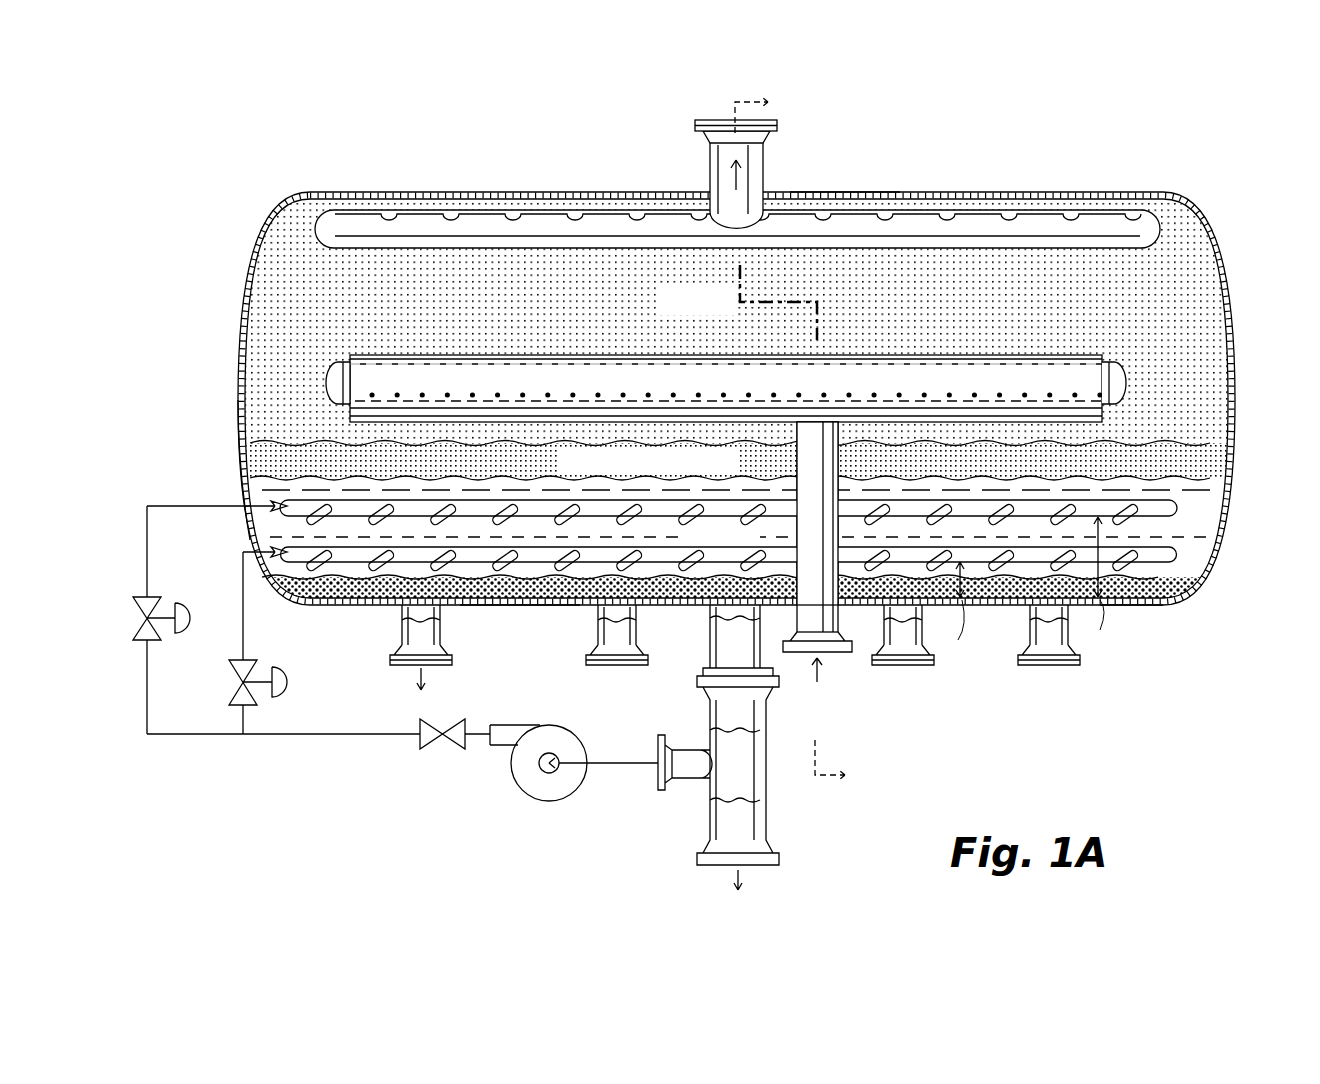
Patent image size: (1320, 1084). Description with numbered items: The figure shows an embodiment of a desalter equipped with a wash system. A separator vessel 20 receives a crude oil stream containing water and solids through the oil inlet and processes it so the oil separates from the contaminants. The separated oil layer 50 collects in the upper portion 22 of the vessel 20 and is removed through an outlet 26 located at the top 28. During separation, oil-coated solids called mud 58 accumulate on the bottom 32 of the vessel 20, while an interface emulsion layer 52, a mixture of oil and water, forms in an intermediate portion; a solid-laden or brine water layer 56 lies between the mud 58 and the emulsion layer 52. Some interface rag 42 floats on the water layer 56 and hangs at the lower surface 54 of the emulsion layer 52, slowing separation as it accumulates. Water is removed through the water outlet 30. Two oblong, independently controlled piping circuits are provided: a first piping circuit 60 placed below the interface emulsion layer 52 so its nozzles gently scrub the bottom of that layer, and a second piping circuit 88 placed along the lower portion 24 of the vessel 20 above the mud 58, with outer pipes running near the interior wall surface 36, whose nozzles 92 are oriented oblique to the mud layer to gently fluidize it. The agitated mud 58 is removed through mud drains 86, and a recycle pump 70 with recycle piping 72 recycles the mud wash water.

The separator vessel 20 is at (420, 183).
The upper portion 22 is at (258, 243).
The lower portion 24 is at (253, 534).
The outlet 26 is at (710, 160).
The top 28 is at (818, 192).
The water outlet 30 is at (705, 640).
The bottom 32 is at (994, 606).
The interior wall surface 36 is at (525, 604).
The interface rag 42 is at (1193, 482).
The oil layer 50 is at (1140, 278).
The interface emulsion layer 52 is at (1188, 458).
The lower surface 54 is at (277, 475).
The water layer 56 is at (1172, 516).
The mud 58 is at (1186, 597).
The first piping circuit 60 is at (1143, 528).
The recycle pump 70 is at (523, 778).
The recycle piping 72 is at (245, 626).
The mud drains 86 is at (430, 623).
The second piping circuit 88 is at (357, 553).
The nozzles 92 is at (323, 562).